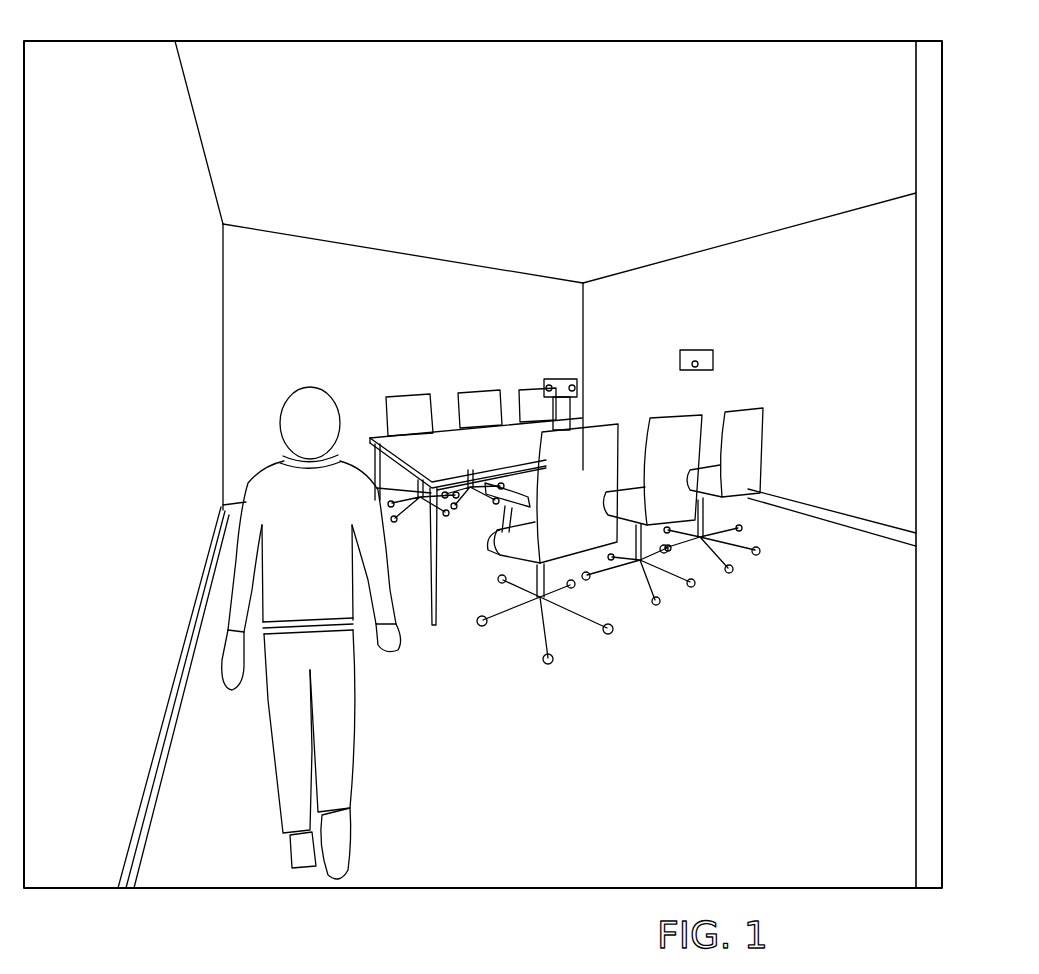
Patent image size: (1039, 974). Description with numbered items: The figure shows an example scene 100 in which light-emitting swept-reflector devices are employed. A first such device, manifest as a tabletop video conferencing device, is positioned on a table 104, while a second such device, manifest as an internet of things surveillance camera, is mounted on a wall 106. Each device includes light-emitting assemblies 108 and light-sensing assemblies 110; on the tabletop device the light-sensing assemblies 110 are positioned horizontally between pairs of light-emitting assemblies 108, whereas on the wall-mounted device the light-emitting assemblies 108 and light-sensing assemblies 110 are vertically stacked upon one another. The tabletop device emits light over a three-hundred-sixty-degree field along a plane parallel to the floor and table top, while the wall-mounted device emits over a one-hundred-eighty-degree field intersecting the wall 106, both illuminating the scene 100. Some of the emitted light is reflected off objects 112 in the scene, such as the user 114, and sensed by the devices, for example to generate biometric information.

The scene 100 is at (502, 29).
The table 104 is at (468, 462).
The wall 106 is at (845, 439).
The light-emitting assemblies 108 is at (560, 379).
The light-sensing assemblies 110 is at (575, 379).
The objects 112 is at (213, 458).
The user 114 is at (325, 544).